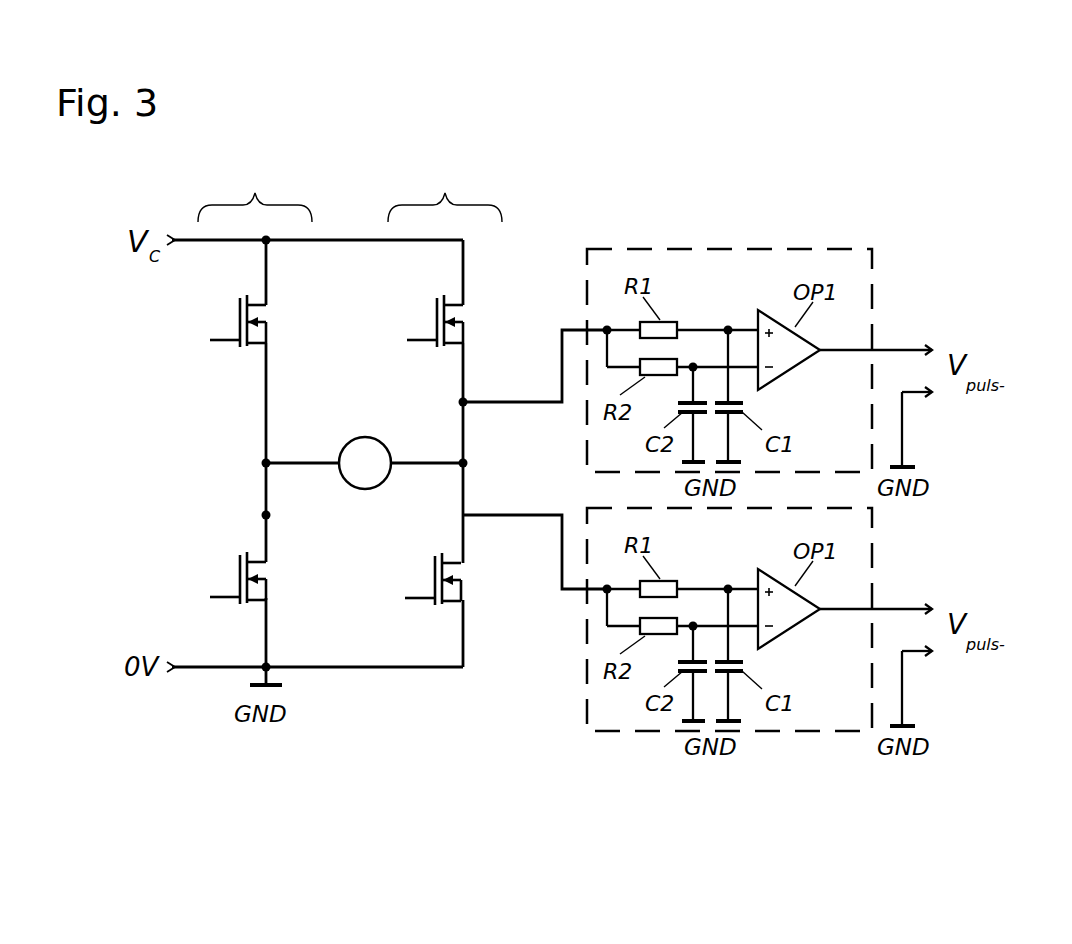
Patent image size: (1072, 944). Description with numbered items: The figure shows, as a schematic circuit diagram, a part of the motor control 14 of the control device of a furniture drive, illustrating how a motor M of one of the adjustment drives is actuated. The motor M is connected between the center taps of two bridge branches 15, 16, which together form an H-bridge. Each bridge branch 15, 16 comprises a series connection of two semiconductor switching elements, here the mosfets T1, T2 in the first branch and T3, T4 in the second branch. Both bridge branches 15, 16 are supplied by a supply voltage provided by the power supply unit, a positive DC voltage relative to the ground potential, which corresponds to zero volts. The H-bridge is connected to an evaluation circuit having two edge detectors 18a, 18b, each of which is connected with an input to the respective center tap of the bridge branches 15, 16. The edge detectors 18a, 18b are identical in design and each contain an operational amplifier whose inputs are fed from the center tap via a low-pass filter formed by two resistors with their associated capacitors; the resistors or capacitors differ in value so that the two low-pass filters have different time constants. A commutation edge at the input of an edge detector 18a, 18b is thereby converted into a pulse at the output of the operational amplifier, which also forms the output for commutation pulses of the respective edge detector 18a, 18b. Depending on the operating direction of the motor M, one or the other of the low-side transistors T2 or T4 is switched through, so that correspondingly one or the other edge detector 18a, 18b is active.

The motor control 14 is at (626, 210).
The first bridge branch 15 is at (255, 194).
The second bridge branch 16 is at (445, 194).
The first edge detector 18a is at (823, 249).
The second edge detector 18b is at (780, 733).
The mosfet T1 is at (238, 343).
The mosfet T2 is at (237, 558).
The mosfet T3 is at (445, 308).
The mosfet T4 is at (433, 600).
The motor M is at (365, 463).